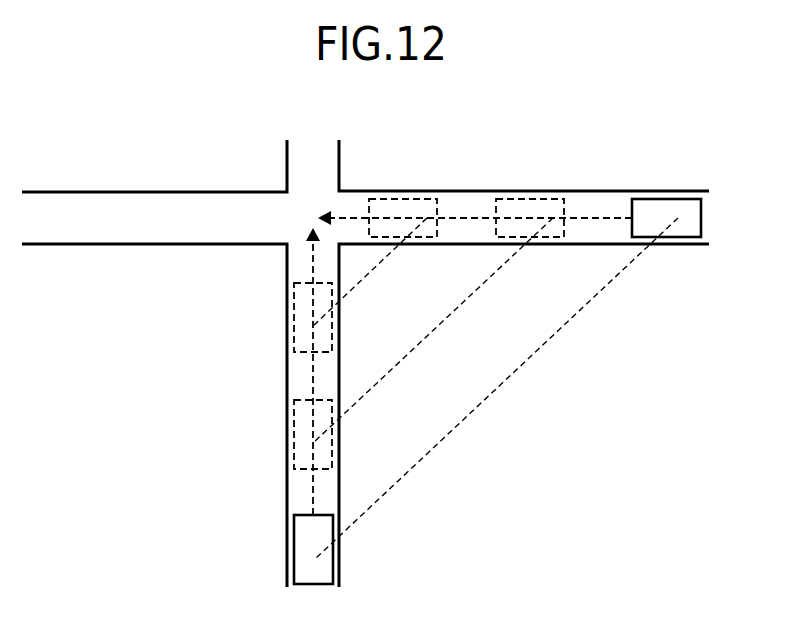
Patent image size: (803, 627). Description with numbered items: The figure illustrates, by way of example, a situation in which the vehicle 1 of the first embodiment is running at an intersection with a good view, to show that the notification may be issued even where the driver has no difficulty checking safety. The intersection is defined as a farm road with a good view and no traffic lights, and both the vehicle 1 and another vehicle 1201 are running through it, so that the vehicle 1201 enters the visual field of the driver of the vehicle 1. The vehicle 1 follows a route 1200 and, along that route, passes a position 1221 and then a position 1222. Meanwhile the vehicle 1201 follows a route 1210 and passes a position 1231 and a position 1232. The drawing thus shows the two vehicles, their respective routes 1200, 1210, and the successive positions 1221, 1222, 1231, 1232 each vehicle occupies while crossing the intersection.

The vehicle 1 is at (294, 546).
The route 1200 is at (312, 373).
The vehicle 1201 is at (661, 199).
The route 1210 is at (592, 217).
The position 1221 is at (293, 442).
The position 1222 is at (293, 320).
The position 1231 is at (524, 198).
The position 1232 is at (398, 198).